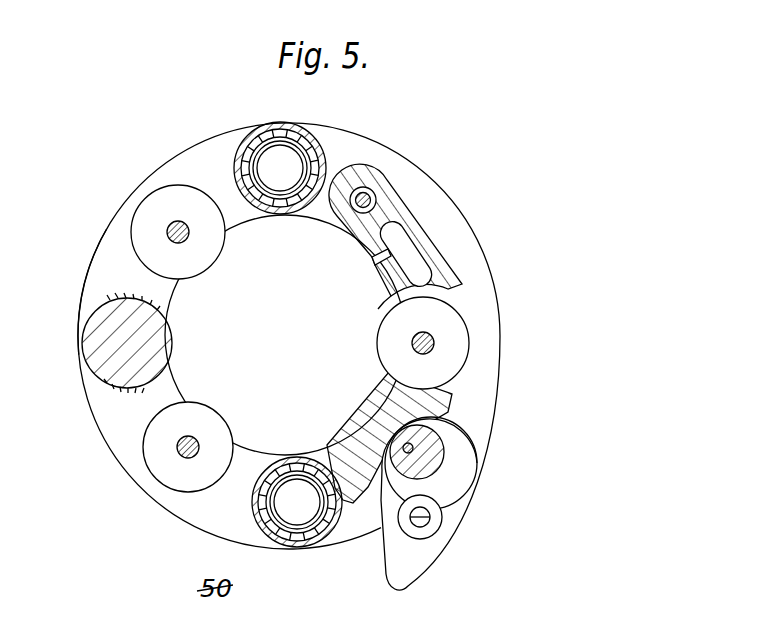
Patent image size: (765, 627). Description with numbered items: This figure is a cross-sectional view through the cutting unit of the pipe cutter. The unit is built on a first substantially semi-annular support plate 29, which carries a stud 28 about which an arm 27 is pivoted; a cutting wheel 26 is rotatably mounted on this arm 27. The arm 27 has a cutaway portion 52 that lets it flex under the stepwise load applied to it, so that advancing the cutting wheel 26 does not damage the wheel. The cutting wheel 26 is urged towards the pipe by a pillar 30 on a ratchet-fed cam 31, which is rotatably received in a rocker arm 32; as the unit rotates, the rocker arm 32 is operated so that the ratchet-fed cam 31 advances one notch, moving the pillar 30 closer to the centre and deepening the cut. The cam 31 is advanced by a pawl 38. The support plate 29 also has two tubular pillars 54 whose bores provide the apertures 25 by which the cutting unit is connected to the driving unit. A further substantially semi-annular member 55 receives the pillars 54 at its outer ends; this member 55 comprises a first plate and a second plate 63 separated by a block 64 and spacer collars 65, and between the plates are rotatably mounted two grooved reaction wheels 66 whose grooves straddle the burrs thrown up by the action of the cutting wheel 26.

The apertures 25 is at (277, 346).
The cutting wheel 26 is at (450, 353).
The arm 27 is at (420, 214).
The stud 28 is at (370, 195).
The first substantially semi-annular support plate 29 is at (468, 263).
The pillar 30 is at (425, 451).
The ratchet-fed cam 31 is at (461, 463).
The rocker arm 32 is at (459, 463).
The pawl 38 is at (428, 527).
The cutaway portion 52 is at (405, 237).
The tubular pillars 54 is at (263, 150).
The further substantially semi-annular member 55 is at (95, 408).
The second plate 63 is at (103, 273).
The block 64 is at (110, 327).
The spacer collars 65 is at (287, 135).
The grooved reaction wheels 66 is at (156, 207).